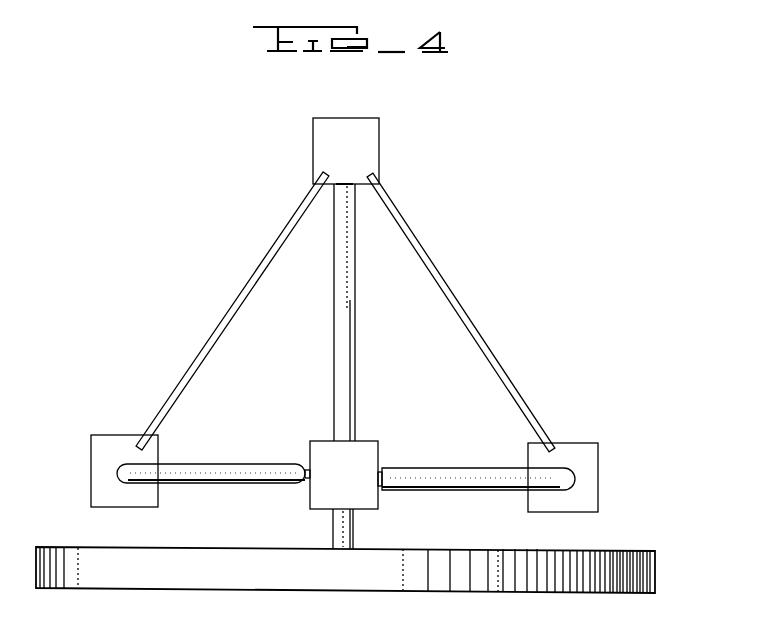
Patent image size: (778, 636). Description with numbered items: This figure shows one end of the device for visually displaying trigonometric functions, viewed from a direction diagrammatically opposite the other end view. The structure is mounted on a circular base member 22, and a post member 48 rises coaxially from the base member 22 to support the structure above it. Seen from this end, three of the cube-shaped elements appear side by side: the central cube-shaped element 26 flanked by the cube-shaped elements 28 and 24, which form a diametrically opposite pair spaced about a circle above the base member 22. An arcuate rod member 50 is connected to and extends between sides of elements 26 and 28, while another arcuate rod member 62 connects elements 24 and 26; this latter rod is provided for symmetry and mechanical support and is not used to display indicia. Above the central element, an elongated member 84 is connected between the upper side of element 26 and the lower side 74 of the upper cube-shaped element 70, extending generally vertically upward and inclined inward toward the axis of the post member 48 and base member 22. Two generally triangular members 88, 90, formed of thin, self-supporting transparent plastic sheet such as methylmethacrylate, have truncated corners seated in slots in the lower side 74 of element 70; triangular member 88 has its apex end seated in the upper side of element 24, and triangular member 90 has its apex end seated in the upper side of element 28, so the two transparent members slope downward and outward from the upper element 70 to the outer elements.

The circular base member 22 is at (655, 572).
The cube-shaped element 24 is at (590, 480).
The cube-shaped element 26 is at (362, 441).
The cube-shaped element 28 is at (91, 469).
The post member 48 is at (355, 527).
The arcuate rod member 50 is at (190, 465).
The arcuate rod member 62 is at (492, 465).
The cube-shaped element 70 is at (372, 132).
The lower side 74 is at (330, 189).
The elongated member 84 is at (356, 272).
The triangular member 88 is at (460, 307).
The triangular member 90 is at (235, 301).